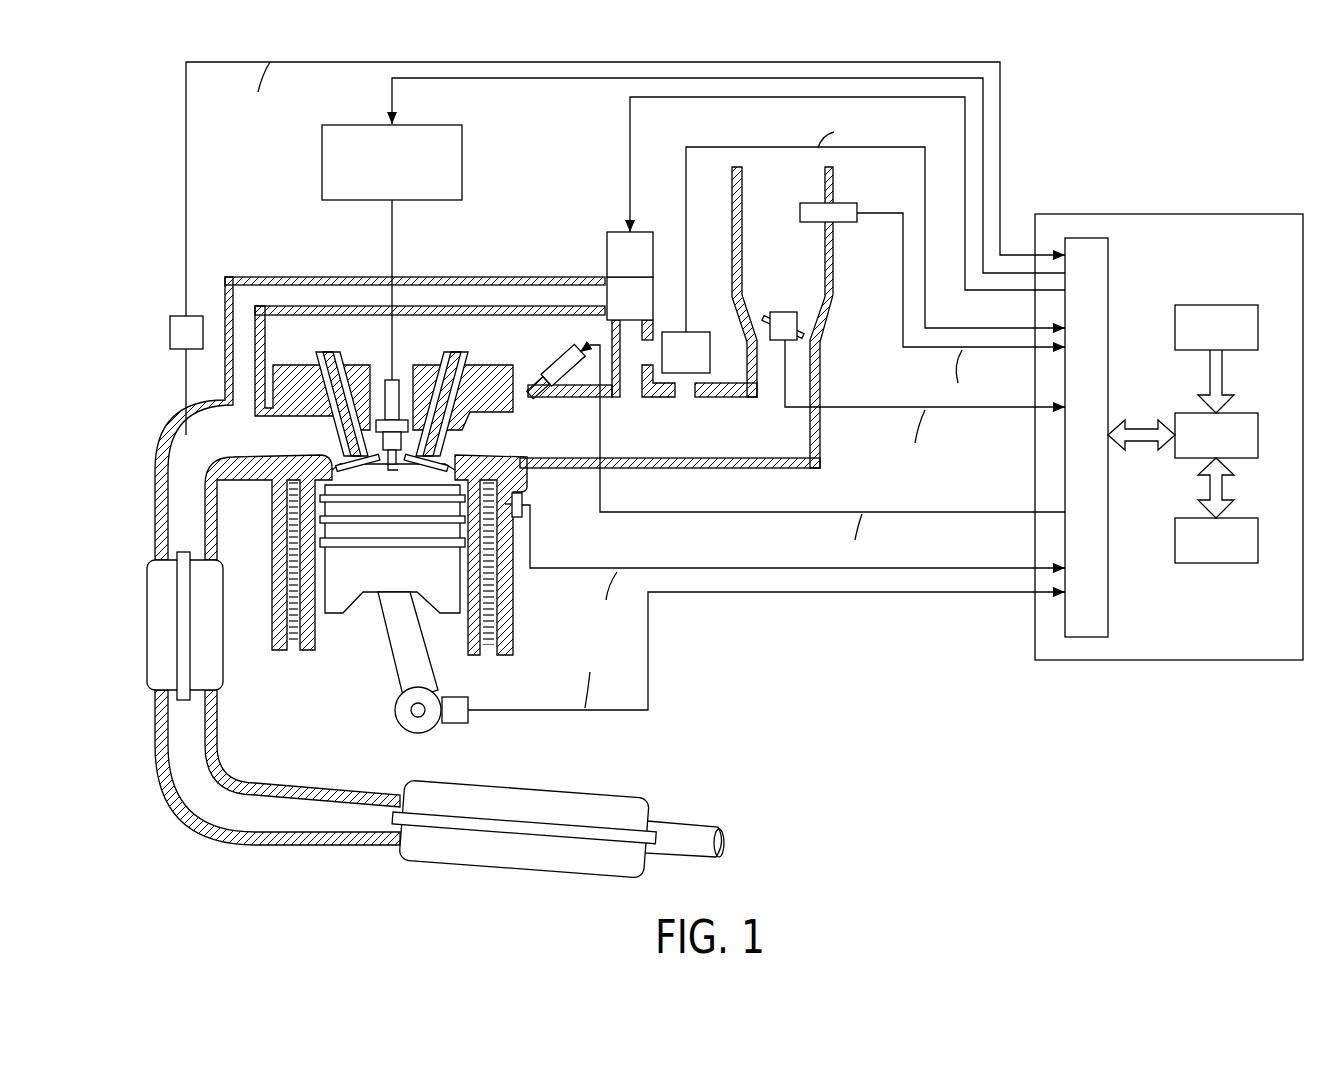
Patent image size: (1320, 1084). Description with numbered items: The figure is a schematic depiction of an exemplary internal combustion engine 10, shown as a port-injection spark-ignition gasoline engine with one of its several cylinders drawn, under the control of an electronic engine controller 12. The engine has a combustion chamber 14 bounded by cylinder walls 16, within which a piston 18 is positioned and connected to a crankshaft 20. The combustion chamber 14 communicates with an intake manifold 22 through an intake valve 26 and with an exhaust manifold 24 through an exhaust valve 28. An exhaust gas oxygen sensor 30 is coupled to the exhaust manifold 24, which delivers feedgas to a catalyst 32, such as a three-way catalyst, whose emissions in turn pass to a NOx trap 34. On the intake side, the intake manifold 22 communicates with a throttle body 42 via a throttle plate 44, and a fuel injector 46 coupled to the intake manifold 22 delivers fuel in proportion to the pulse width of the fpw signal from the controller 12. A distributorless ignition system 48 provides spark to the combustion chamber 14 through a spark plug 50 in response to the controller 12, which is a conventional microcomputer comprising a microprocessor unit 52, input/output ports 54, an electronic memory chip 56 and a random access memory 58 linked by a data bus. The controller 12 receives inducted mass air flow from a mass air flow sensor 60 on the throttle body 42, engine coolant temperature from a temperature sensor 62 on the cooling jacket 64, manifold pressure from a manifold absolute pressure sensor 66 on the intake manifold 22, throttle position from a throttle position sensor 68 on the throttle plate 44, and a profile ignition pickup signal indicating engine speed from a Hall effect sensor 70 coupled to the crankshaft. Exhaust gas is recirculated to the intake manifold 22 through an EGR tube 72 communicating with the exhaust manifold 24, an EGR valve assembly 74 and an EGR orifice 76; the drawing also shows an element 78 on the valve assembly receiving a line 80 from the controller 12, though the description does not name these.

The internal combustion engine 10 is at (355, 715).
The electronic engine controller 12 is at (1169, 405).
The combustion chamber 14 is at (375, 478).
The cylinder walls 16 is at (320, 655).
The piston 18 is at (392, 596).
The crankshaft 20 is at (408, 722).
The intake manifold 22 is at (770, 440).
The exhaust manifold 24 is at (178, 492).
The intake valve 26 is at (445, 450).
The exhaust valve 28 is at (340, 450).
The exhaust gas oxygen sensor 30 is at (193, 314).
The catalyst 32 is at (146, 625).
The NOx trap 34 is at (612, 784).
The throttle body 42 is at (810, 184).
The throttle plate 44 is at (765, 318).
The fuel injector 46 is at (537, 365).
The distributorless ignition system 48 is at (462, 147).
The spark plug 50 is at (398, 388).
The microprocessor unit 52 is at (1247, 413).
The input/output ports 54 is at (1108, 265).
The electronic memory chip 56 is at (1235, 305).
The random access memory 58 is at (1247, 518).
The mass air flow sensor 60 is at (845, 213).
The temperature sensor 62 is at (530, 504).
The cooling jacket 64 is at (490, 600).
The manifold absolute pressure sensor 66 is at (698, 362).
The throttle position sensor 68 is at (792, 312).
The Hall effect sensor 70 is at (470, 700).
The EGR tube 72 is at (285, 283).
The EGR valve assembly 74 is at (642, 309).
The EGR orifice 76 is at (630, 397).
The vacuum regulator 78 is at (642, 269).
The vacuum regulator control signal 80 is at (627, 153).